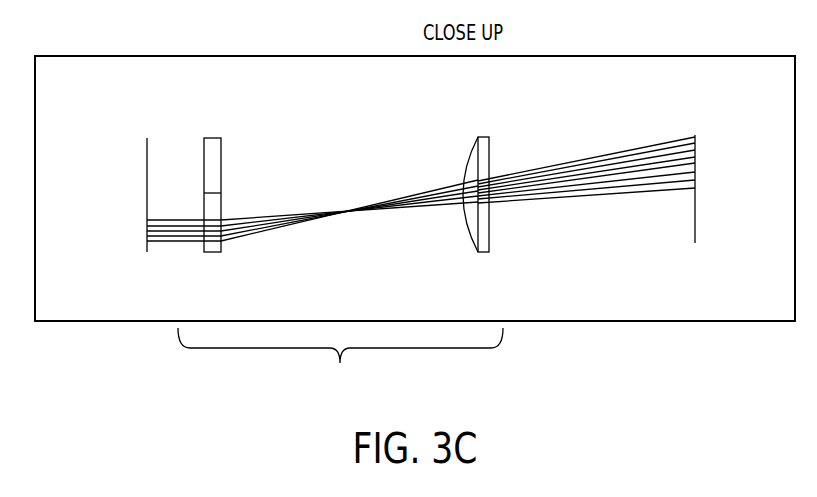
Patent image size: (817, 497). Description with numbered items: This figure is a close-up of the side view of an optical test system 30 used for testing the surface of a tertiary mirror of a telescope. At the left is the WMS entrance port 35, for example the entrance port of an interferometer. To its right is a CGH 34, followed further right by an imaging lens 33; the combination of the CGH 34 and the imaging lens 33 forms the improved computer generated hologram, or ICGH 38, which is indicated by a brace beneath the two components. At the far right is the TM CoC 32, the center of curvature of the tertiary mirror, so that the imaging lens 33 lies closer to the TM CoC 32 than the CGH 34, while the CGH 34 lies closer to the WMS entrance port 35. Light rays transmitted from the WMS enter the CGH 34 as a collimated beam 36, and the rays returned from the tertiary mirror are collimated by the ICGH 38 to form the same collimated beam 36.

The close-up optical system 30 is at (413, 93).
The TM CoC (center of curvature of the tertiary mirror) 32 is at (696, 230).
The imaging lens 33 is at (497, 228).
The CGH 34 is at (226, 176).
The WMS entrance port 35 is at (142, 193).
The collimated beam 36 is at (163, 249).
The ICGH (improved computer generated hologram) 38 is at (340, 360).